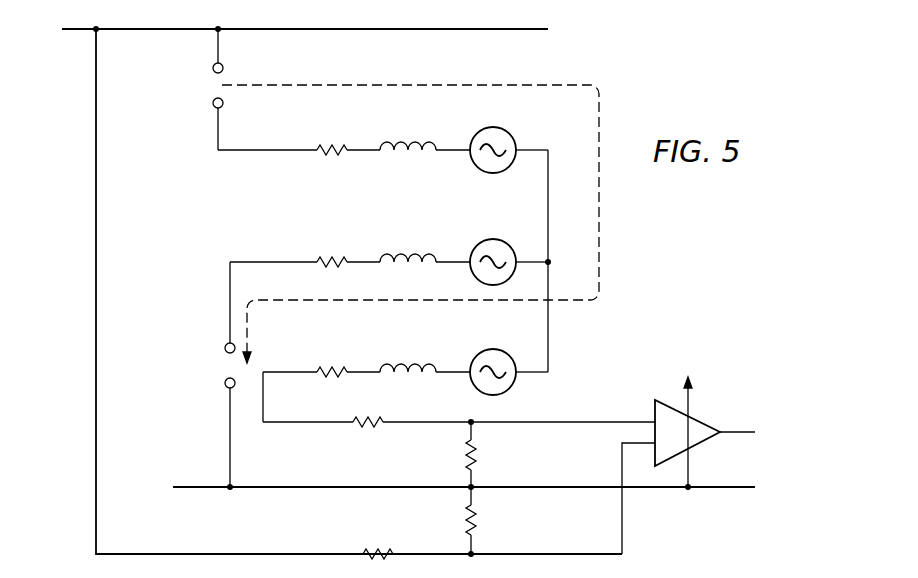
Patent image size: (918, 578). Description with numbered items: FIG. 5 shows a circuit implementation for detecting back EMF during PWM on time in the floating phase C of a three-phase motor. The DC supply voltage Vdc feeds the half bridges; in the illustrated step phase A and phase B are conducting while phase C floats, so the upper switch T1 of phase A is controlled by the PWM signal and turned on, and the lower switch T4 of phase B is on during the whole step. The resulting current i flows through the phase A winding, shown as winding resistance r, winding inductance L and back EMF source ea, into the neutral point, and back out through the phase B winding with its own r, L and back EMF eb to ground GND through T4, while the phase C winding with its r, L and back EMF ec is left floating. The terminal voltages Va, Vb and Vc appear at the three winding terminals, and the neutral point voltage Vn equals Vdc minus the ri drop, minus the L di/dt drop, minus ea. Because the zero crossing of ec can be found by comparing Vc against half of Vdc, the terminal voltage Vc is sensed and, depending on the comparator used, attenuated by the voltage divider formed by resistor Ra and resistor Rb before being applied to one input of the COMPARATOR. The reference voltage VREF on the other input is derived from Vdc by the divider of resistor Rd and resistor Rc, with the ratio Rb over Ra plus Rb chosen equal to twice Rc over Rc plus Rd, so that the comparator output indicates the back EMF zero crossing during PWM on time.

The DC supply voltage Vdc is at (322, 286).
The upper switch of phase A T1 is at (213, 86).
The lower switch of phase B T4 is at (225, 366).
The winding current i is at (410, 212).
The phase A terminal voltage Va is at (267, 137).
The phase B terminal voltage Vb is at (273, 248).
The phase C terminal voltage Vc is at (290, 382).
The winding resistance r is at (348, 250).
The winding inductance L is at (425, 245).
The back EMF of phase A ea is at (509, 137).
The back EMF of phase B eb is at (509, 248).
The back EMF of phase C ec is at (509, 359).
The neutral point voltage Vn is at (562, 261).
The resistor Ra is at (459, 408).
The resistor Rb is at (486, 456).
The resistor Rc is at (485, 522).
The resistor Rd is at (378, 538).
The ground GND is at (440, 488).
The reference voltage VREF is at (647, 506).
The voltage comparator COMPARATOR is at (741, 432).